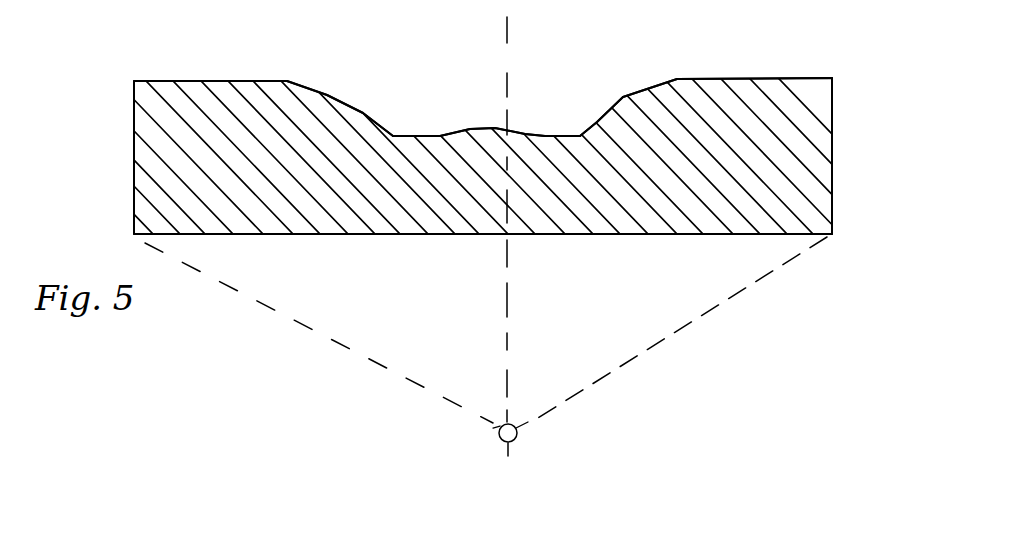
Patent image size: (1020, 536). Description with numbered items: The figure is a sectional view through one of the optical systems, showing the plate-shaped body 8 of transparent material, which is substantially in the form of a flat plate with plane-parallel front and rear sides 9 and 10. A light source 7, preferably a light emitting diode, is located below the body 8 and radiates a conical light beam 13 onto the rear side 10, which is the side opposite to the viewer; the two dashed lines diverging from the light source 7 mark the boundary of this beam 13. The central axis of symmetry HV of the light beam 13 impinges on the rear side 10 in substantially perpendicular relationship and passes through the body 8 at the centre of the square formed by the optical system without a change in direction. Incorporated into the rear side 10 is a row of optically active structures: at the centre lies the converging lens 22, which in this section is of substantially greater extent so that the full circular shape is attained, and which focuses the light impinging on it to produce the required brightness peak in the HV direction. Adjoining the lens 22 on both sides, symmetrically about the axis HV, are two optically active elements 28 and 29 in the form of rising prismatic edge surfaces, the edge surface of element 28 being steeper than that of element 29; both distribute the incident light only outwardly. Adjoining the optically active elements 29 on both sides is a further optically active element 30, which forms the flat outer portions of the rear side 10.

The rear side 10 is at (808, 76).
The optically active element 30 is at (186, 79).
The optically active element 29 is at (298, 84).
The optically active element 28 is at (367, 110).
The converging lens 22 is at (485, 124).
The central axis of symmetry HV is at (508, 31).
The plate-shaped body 8 is at (820, 158).
The front side 9 is at (609, 233).
The conical light beam 13 is at (643, 352).
The light source 7 is at (509, 443).